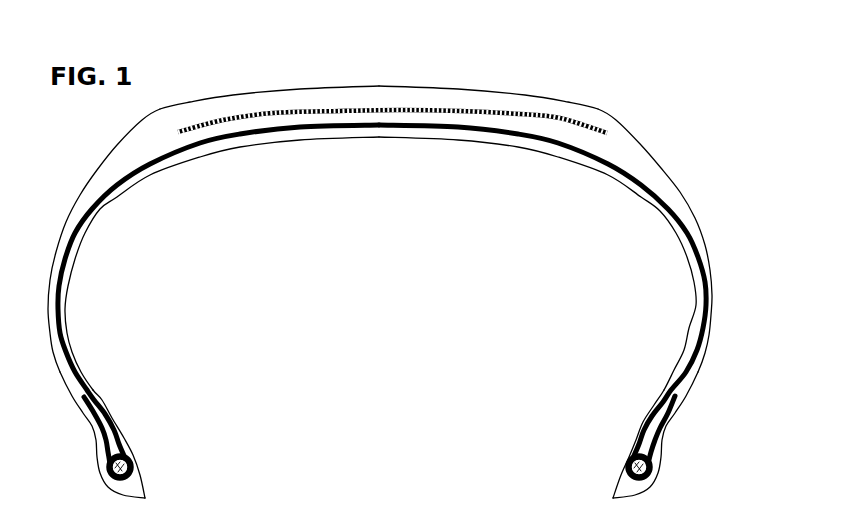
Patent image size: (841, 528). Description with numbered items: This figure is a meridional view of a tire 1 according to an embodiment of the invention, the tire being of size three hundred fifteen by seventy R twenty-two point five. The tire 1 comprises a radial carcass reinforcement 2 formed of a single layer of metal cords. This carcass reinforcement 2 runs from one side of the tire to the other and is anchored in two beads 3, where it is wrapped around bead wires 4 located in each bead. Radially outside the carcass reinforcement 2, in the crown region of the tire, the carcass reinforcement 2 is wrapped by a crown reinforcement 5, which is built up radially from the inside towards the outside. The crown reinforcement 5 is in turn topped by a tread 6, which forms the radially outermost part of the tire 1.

The tire 1 is at (592, 62).
The radial carcass reinforcement 2 is at (65, 304).
The beads 3 is at (140, 487).
The bead wires 4 is at (128, 462).
The crown reinforcement 5 is at (235, 122).
The tread 6 is at (323, 87).